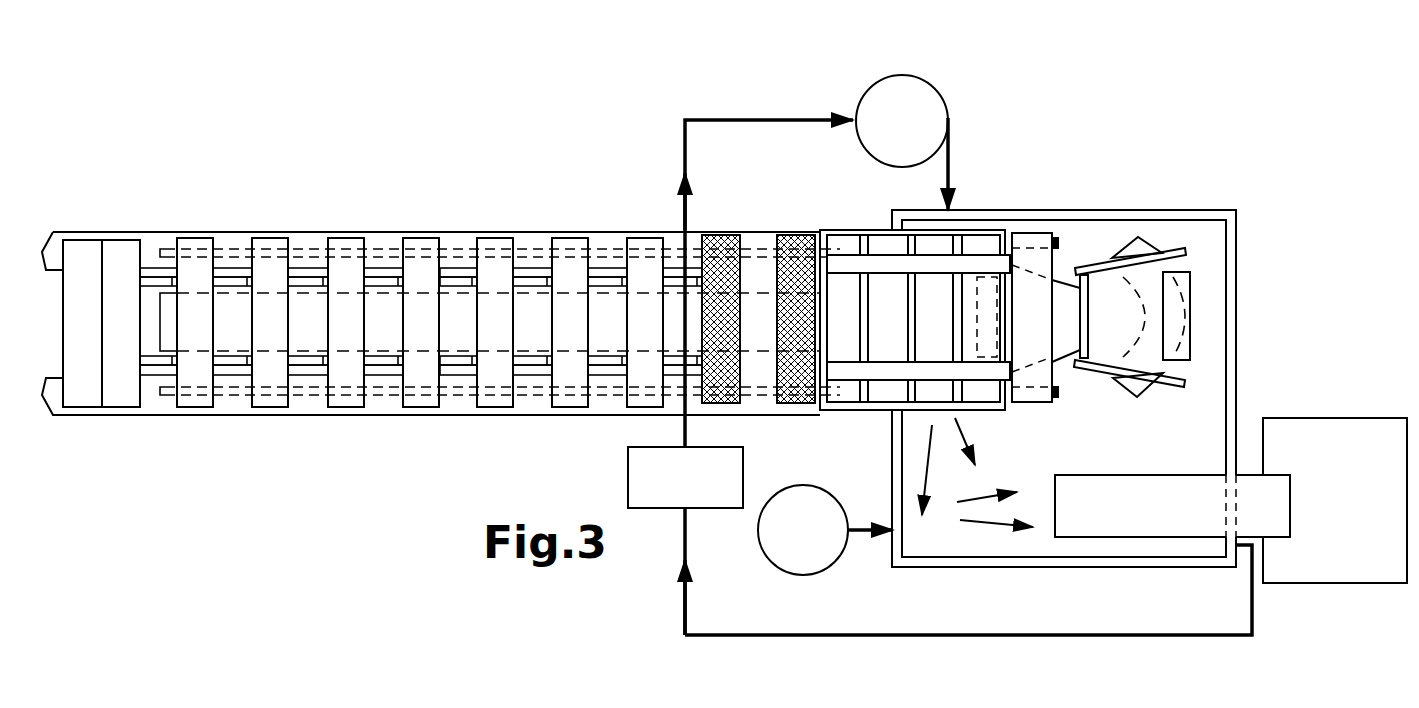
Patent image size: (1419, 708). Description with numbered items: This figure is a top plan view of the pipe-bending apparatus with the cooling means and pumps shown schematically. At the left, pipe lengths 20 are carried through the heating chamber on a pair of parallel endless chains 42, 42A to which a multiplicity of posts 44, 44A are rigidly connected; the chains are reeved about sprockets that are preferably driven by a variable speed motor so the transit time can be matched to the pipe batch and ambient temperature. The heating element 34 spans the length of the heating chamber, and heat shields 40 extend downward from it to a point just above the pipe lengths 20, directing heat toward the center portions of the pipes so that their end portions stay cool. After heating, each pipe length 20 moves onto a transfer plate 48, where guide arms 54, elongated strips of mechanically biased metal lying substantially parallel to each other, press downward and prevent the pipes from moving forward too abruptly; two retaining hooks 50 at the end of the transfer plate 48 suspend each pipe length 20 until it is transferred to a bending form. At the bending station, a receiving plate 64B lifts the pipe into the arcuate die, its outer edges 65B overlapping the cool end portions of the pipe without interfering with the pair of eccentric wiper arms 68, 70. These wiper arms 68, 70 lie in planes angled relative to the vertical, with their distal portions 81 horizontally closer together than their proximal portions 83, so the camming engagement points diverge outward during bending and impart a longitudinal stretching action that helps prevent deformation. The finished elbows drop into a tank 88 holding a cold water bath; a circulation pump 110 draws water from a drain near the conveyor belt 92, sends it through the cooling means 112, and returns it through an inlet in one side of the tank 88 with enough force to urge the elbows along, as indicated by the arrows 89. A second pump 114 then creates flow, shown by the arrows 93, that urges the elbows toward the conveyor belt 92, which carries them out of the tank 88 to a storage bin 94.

The pipe length 20 is at (78, 270).
The heating element 34 is at (455, 315).
The heat shield 40 is at (162, 250).
The endless chain 42 is at (310, 362).
The endless chain 42A is at (305, 280).
The post 44 is at (395, 357).
The post 44A is at (397, 283).
The transfer plate 48 is at (978, 240).
The retaining hook 50 is at (1058, 243).
The guide arm 54 is at (850, 263).
The receiving plate 64B is at (1190, 285).
The outer edge 65B is at (1183, 270).
The wiper arm 68 is at (1180, 386).
The wiper arm 70 is at (1187, 268).
The distal portion 81 is at (1097, 260).
The proximal portion 83 is at (1167, 250).
The tank 88 is at (1230, 316).
The arrows 89 is at (958, 432).
The conveyor belt 92 is at (1252, 483).
The arrows 93 is at (990, 525).
The storage bin 94 is at (1338, 518).
The circulation pump 110 is at (908, 87).
The cooling means 112 is at (642, 508).
The second pump 114 is at (810, 565).